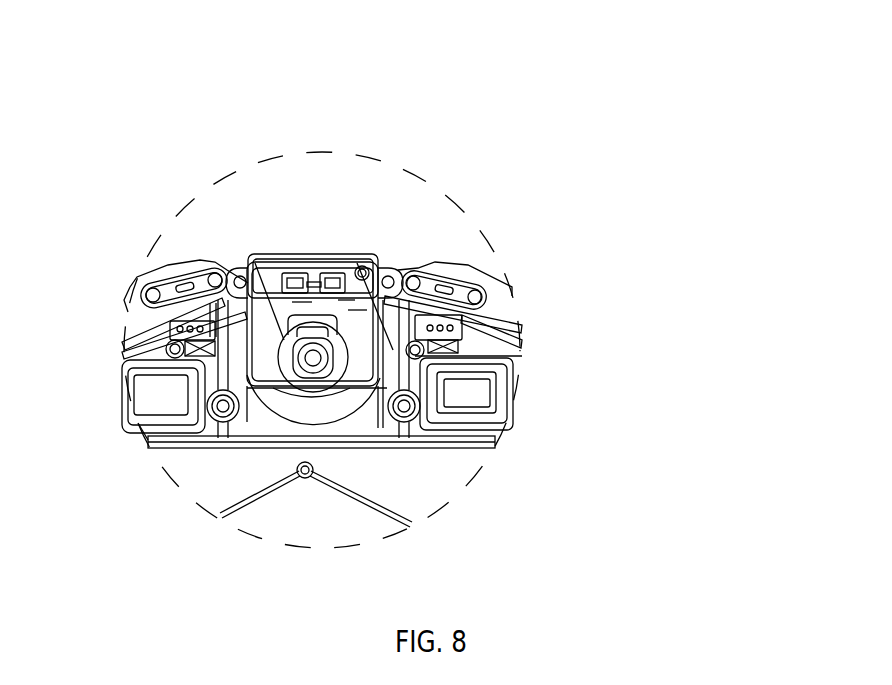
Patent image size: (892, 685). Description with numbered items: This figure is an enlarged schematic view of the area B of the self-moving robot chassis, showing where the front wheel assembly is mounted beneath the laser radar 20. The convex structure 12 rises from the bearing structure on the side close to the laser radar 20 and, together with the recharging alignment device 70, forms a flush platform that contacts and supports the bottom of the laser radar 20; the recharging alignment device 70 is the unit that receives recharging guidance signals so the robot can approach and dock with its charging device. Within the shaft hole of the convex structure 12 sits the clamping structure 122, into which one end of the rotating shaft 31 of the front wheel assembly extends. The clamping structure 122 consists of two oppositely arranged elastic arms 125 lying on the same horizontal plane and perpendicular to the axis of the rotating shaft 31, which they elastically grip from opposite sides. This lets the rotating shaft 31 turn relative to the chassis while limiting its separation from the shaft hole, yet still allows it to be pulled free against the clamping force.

The area B is at (292, 153).
The convex structure 12 is at (258, 258).
The laser radar 20 is at (363, 260).
The rotating shaft 31 is at (302, 354).
The recharging alignment device 70 is at (325, 258).
The clamping structure 122 is at (620, 548).
The elastic arms 125 is at (290, 362).